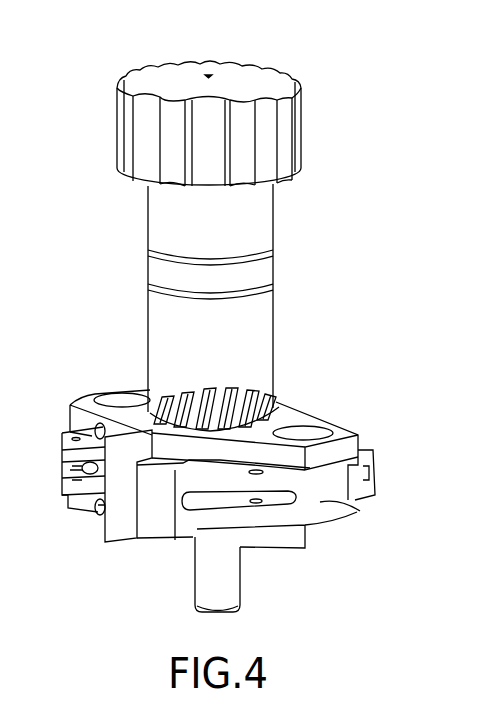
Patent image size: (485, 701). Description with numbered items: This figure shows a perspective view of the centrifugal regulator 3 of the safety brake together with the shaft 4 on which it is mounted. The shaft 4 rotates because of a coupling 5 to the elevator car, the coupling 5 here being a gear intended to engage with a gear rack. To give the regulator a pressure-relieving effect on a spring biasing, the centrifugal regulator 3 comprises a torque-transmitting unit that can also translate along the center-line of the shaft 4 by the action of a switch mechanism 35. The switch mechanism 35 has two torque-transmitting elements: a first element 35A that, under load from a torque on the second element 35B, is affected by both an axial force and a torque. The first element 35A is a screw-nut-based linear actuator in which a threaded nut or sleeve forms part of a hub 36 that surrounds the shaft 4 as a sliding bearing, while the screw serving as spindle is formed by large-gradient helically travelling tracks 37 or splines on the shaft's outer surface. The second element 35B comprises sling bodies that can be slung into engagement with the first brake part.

The centrifugal regulator 3 is at (72, 582).
The shaft 4 is at (259, 223).
The coupling 5 is at (212, 112).
The switch mechanism 35 is at (320, 383).
The first torque-transmitting element 35A is at (183, 407).
The second torque-transmitting element 35B is at (322, 503).
The hub 36 is at (198, 489).
The helically travelling tracks 37 is at (230, 387).